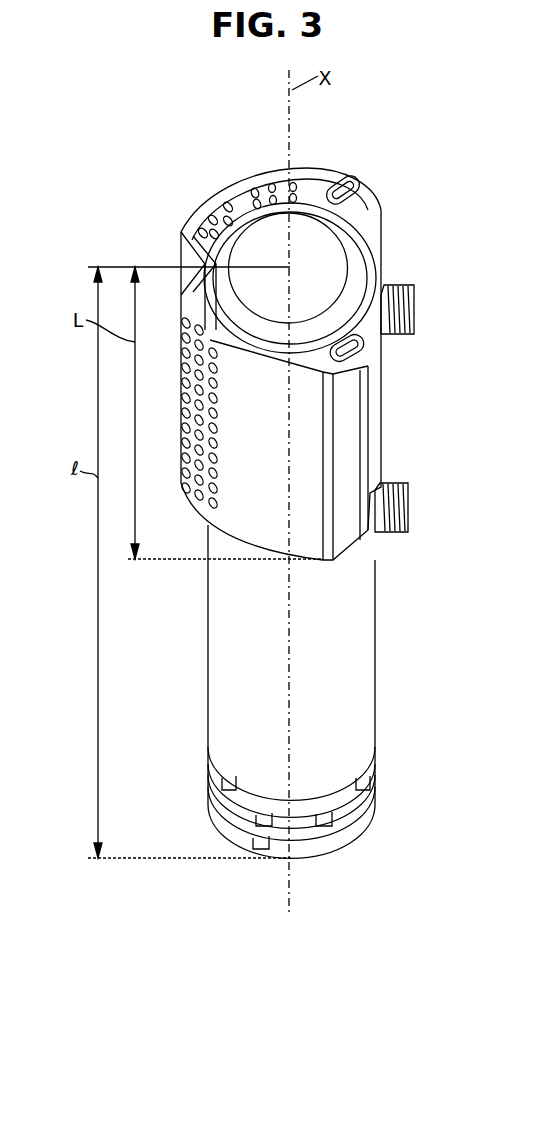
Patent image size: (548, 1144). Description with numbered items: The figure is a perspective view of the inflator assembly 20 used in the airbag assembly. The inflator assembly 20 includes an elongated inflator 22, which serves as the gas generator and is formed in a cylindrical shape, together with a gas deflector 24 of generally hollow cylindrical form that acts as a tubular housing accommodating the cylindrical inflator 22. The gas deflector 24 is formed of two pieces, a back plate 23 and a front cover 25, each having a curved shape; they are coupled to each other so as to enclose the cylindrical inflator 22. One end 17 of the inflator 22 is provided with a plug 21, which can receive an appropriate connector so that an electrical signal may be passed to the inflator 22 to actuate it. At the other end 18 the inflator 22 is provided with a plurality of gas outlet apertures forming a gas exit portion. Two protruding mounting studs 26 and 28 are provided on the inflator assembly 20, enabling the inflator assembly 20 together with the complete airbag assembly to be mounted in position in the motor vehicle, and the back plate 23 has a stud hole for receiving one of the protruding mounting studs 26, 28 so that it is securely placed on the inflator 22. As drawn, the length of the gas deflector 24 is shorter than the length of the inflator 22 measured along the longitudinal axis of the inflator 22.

The inflator assembly 20 is at (86, 118).
The gas deflector 24 is at (440, 140).
The front cover 25 is at (320, 172).
The back plate 23 is at (368, 238).
The other end 18 is at (333, 265).
The protruding mounting stud 26 is at (413, 303).
The protruding mounting stud 28 is at (407, 503).
The inflator 22 is at (353, 652).
The plug 21 is at (339, 852).
The end 17 is at (270, 845).